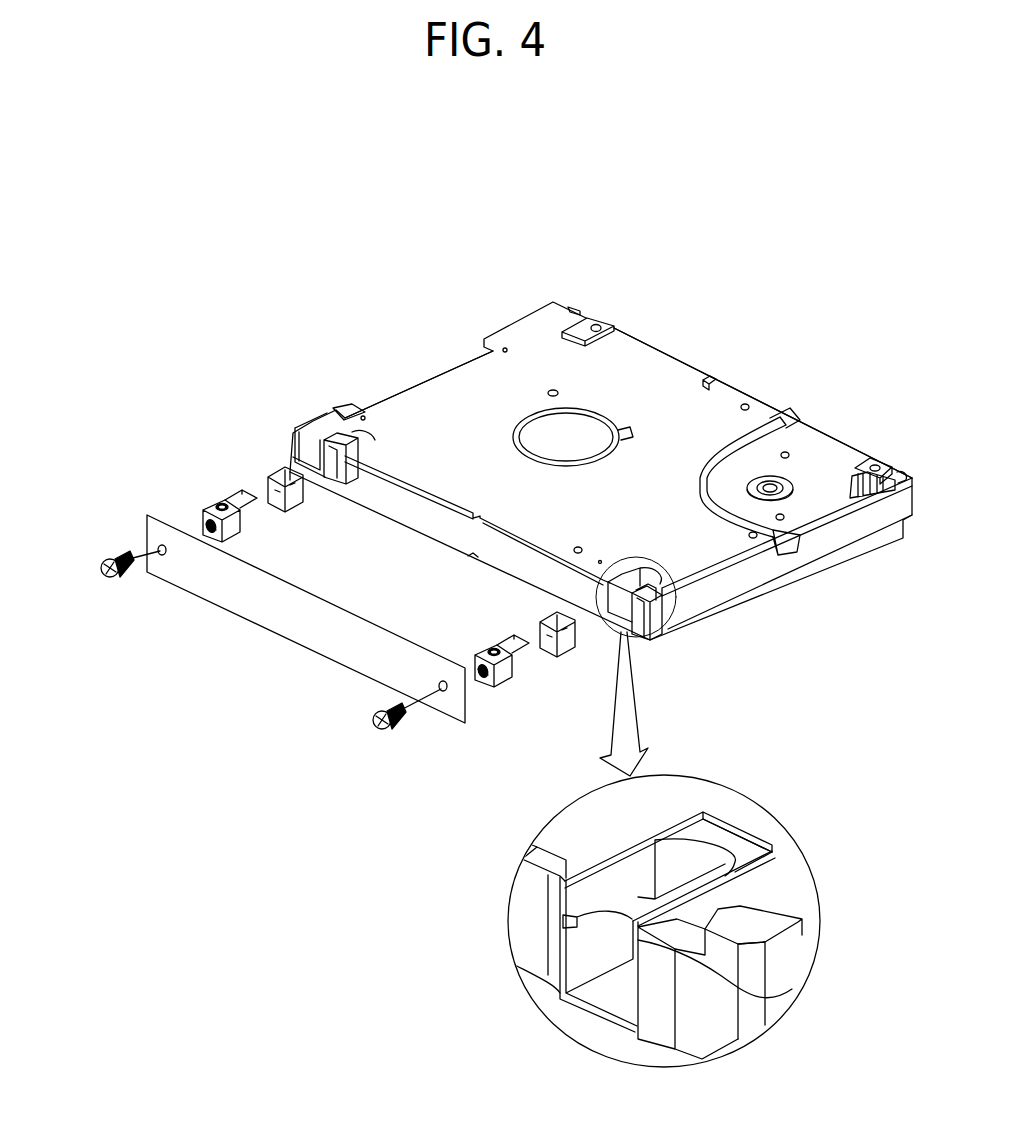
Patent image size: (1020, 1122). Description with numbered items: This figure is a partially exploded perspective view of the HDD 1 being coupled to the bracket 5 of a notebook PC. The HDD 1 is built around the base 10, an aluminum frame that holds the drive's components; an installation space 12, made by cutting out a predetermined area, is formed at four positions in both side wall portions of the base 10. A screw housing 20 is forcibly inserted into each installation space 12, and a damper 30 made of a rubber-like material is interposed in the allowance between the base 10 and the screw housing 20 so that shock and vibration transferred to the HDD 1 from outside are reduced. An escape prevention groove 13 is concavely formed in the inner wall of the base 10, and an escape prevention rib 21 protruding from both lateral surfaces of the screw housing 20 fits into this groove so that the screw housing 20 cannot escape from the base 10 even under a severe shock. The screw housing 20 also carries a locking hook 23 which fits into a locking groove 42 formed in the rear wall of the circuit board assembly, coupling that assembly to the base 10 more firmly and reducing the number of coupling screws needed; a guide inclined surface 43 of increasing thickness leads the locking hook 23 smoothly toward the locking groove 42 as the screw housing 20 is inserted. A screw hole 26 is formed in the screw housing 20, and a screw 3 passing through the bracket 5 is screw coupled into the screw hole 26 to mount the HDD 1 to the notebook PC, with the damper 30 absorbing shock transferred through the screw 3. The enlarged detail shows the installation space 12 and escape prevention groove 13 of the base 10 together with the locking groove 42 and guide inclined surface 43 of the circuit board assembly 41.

The HDD 1 is at (250, 286).
The screw 3 is at (112, 572).
The bracket 5 is at (308, 623).
The base 10 is at (455, 512).
The installation space 12 is at (338, 450).
The escape prevention groove 13 is at (792, 986).
The screw housing 20 is at (197, 508).
The escape prevention rib 21 is at (223, 528).
The locking hook 23 is at (232, 492).
The screw hole 26 is at (485, 677).
The damper 30 is at (300, 507).
The top plate 41 is at (723, 398).
The locking groove 42 is at (772, 846).
The guide inclined surface 43 is at (735, 872).